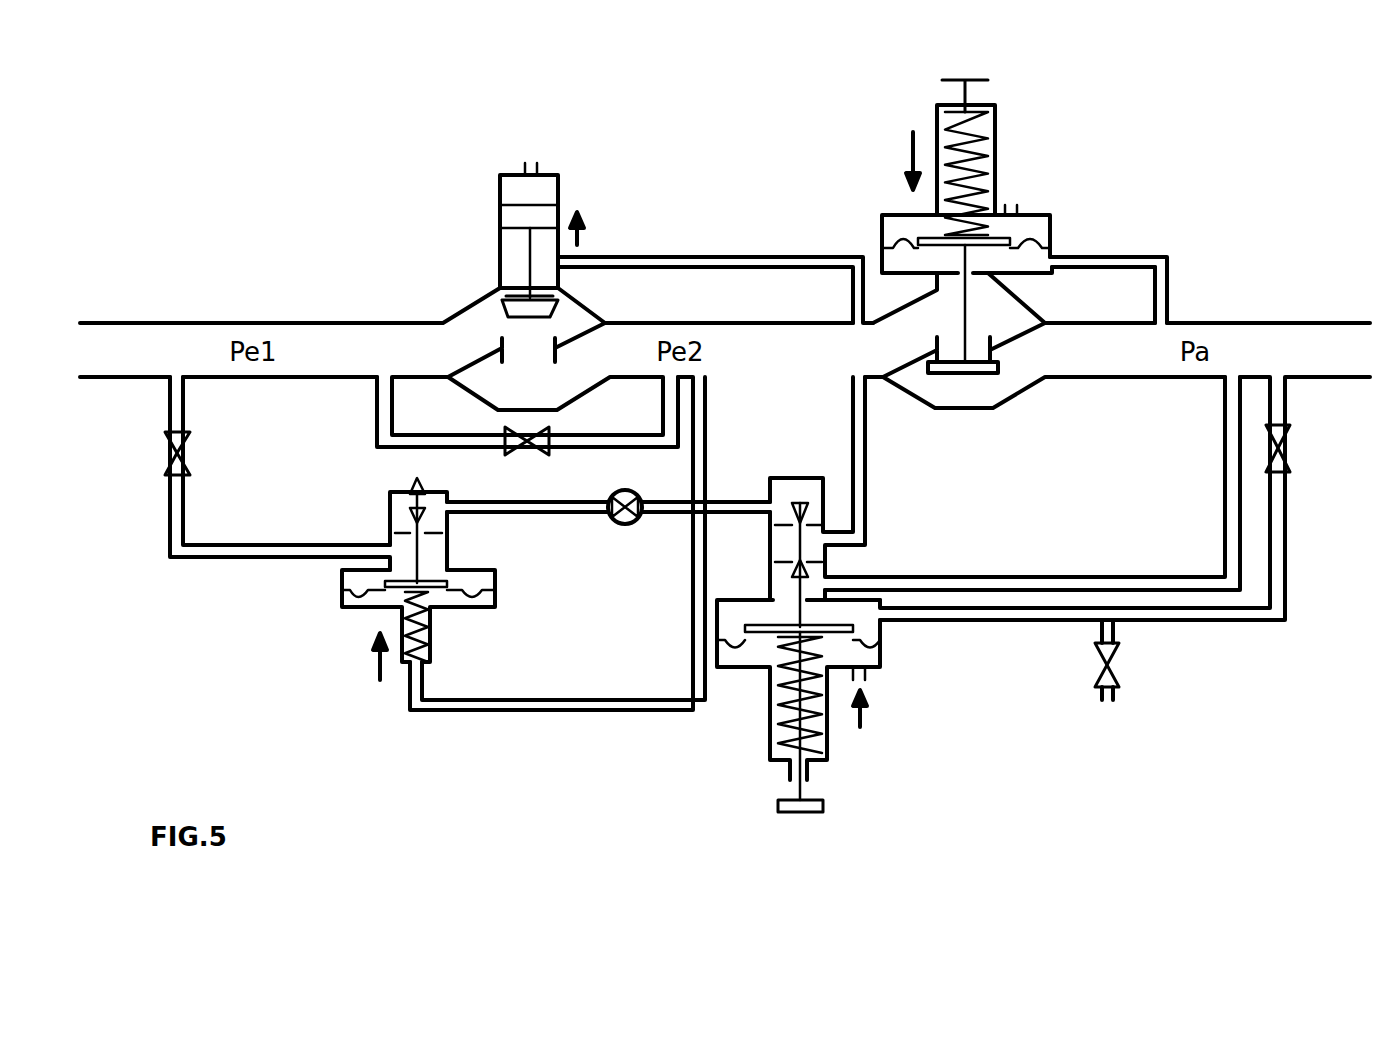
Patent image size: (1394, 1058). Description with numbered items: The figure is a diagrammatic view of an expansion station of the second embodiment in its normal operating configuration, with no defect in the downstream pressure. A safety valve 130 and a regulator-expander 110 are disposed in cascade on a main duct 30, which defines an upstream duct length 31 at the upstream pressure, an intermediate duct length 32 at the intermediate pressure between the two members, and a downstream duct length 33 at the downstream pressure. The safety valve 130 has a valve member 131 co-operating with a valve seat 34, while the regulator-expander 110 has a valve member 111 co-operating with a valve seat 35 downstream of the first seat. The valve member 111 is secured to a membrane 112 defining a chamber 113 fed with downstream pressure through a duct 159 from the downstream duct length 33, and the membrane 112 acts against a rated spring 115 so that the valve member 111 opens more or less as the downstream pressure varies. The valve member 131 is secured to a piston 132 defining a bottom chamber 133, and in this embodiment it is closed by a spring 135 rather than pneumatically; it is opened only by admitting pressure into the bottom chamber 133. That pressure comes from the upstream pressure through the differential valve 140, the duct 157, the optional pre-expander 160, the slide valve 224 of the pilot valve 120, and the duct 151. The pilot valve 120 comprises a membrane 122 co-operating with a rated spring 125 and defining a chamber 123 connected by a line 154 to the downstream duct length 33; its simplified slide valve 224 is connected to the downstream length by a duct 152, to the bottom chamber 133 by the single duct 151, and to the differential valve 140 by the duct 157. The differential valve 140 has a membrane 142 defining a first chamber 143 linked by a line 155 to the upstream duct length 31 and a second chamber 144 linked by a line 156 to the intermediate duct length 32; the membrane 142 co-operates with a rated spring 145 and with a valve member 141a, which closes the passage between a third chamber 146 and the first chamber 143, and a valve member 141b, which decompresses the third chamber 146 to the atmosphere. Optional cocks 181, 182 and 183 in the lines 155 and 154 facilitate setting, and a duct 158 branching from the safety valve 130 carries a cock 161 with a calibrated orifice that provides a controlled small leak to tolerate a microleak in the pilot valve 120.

The main duct 30 is at (1261, 311).
The upstream duct length 31 is at (218, 322).
The intermediate duct length 32 is at (790, 318).
The downstream duct length 33 is at (1138, 382).
The valve seat 34 is at (478, 384).
The valve seat 35 is at (998, 330).
The regulator-expander 110 is at (1046, 153).
The valve member 111 is at (963, 375).
The membrane 112 is at (1042, 215).
The chamber 113 is at (898, 257).
The rated spring 115 is at (992, 133).
The pilot valve 120 is at (893, 681).
The membrane 122 is at (733, 670).
The chamber 123 is at (867, 603).
The rated spring 125 is at (827, 735).
The safety valve 130 is at (488, 236).
The valve member 131 is at (482, 318).
The piston 132 is at (538, 215).
The bottom chamber 133 is at (543, 247).
The spring 135 is at (508, 302).
The differential valve 140 is at (362, 620).
The valve member 141a is at (425, 520).
The valve member 141b is at (408, 490).
The membrane 142 is at (343, 603).
The first chamber 143 is at (400, 556).
The second chamber 144 is at (462, 597).
The rated spring 145 is at (430, 640).
The third chamber 146 is at (390, 503).
The duct 151 is at (783, 255).
The duct 152 is at (1043, 553).
The line 154 is at (1287, 590).
The line 155 is at (202, 555).
The line 156 is at (530, 715).
The duct 157 is at (541, 513).
The duct 158 is at (527, 406).
The duct 159 is at (1160, 253).
The pre-expander 160 is at (628, 527).
The cock 161 is at (543, 444).
The cock 181 is at (165, 445).
The cock 182 is at (1288, 458).
The cock 183 is at (1115, 682).
The slide valve 224 is at (811, 468).